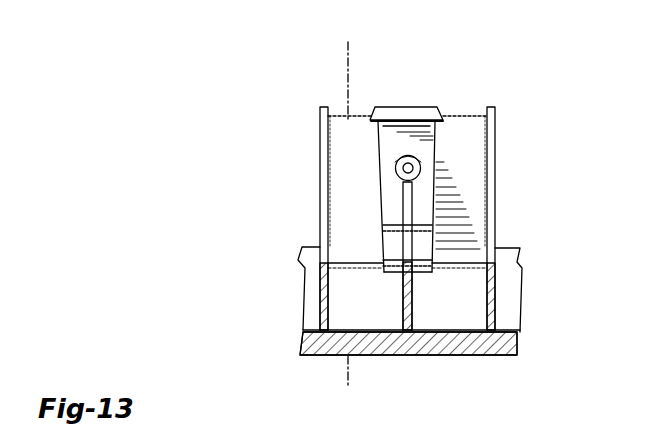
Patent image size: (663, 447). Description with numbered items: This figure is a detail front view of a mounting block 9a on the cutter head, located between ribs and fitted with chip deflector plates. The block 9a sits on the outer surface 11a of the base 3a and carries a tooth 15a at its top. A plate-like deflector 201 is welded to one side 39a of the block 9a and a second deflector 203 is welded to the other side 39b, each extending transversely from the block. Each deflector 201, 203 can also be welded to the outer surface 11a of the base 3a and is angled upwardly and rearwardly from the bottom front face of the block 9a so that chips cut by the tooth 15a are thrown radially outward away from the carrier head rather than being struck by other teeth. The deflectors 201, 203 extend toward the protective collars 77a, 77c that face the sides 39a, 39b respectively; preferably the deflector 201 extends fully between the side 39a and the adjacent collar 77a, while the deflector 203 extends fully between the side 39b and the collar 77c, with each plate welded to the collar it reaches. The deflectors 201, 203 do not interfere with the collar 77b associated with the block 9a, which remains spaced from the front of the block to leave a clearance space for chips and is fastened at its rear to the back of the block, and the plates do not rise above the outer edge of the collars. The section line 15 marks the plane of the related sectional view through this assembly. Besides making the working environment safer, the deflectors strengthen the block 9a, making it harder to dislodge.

The section line 15 is at (378, 42).
The base 3a is at (521, 343).
The outer surface of the base 11a is at (508, 333).
The protective collar 77a is at (322, 136).
The protective collar 77c is at (496, 155).
The collar 77b is at (405, 298).
The deflector plate 201 is at (339, 112).
The deflector plate 203 is at (470, 111).
The tooth 15a is at (431, 104).
The side of the block 39a is at (379, 153).
The side of the block 39b is at (437, 152).
The mounting block 9a is at (427, 243).